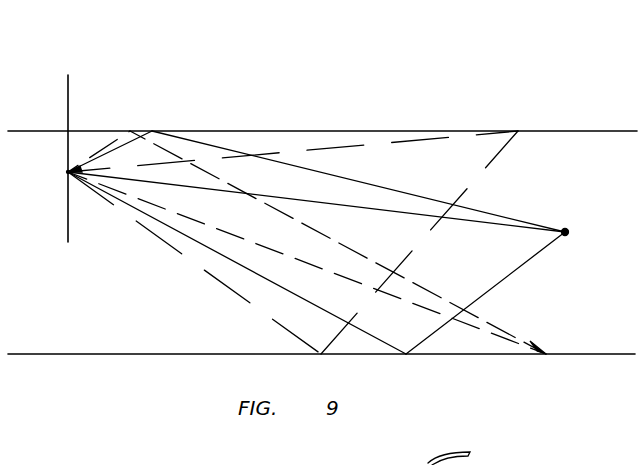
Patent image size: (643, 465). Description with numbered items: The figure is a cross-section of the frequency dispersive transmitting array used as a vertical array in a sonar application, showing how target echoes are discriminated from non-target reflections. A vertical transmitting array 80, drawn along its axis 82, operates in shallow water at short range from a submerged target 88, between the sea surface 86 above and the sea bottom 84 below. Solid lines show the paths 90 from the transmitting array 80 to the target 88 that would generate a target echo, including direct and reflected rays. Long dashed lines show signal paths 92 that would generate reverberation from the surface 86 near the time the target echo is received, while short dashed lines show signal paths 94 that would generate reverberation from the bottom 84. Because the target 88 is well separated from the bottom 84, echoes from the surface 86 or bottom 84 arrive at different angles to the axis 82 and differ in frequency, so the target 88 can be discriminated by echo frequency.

The vertical transmitting array 80 is at (66, 172).
The axis of transmitting array 82 is at (87, 62).
The sea bottom 84 is at (463, 355).
The sea surface 86 is at (595, 131).
The target 88 is at (568, 233).
The paths generating a target echo 90 is at (127, 141).
The signal paths generating surface reverberation 92 is at (333, 148).
The signal paths generating bottom reverberation 94 is at (103, 147).